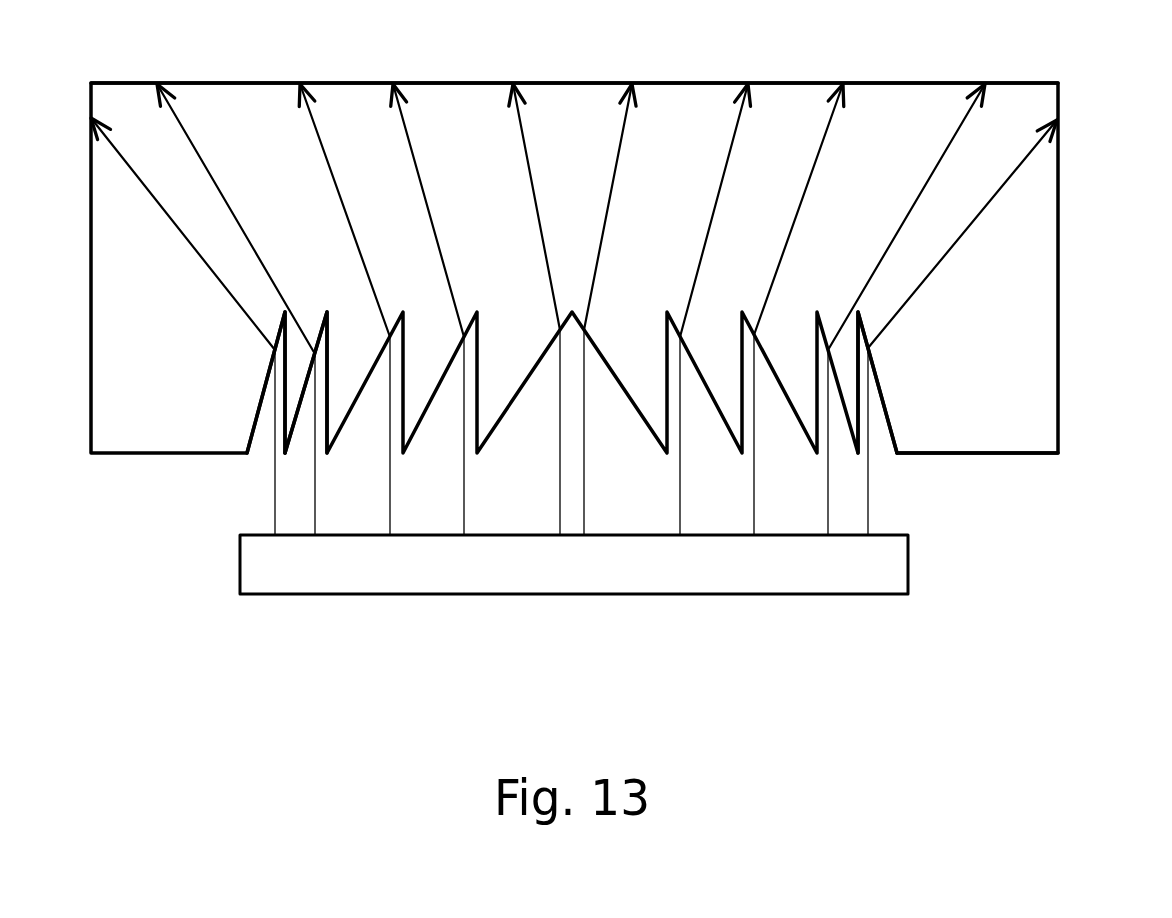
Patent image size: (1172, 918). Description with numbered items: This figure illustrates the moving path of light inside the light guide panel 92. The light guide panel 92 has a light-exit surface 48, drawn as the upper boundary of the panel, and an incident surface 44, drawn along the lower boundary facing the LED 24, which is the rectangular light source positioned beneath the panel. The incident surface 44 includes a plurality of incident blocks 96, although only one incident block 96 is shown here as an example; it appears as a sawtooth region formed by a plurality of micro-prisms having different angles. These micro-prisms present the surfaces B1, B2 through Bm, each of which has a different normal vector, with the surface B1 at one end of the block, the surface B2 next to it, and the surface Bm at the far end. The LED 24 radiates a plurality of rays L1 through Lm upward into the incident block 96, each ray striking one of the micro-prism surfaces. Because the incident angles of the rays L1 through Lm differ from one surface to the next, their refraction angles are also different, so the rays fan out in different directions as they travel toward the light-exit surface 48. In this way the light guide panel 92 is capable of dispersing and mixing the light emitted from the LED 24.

The LED 24 is at (910, 568).
The incident surface 44 is at (1003, 455).
The light-exit surface 48 is at (906, 83).
The light guide panel 92 is at (626, 273).
The incident block 96 is at (623, 303).
The surface of micro-prism B1 is at (263, 387).
The surface of micro-prism B2 is at (324, 328).
The surface of micro-prism Bm is at (880, 386).
The ray L1 is at (274, 503).
The ray Lm is at (869, 503).